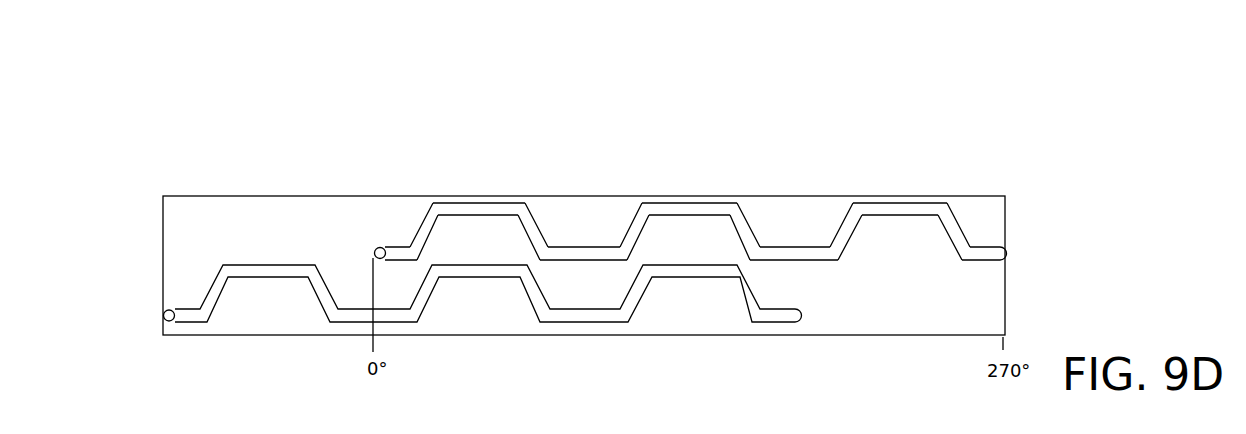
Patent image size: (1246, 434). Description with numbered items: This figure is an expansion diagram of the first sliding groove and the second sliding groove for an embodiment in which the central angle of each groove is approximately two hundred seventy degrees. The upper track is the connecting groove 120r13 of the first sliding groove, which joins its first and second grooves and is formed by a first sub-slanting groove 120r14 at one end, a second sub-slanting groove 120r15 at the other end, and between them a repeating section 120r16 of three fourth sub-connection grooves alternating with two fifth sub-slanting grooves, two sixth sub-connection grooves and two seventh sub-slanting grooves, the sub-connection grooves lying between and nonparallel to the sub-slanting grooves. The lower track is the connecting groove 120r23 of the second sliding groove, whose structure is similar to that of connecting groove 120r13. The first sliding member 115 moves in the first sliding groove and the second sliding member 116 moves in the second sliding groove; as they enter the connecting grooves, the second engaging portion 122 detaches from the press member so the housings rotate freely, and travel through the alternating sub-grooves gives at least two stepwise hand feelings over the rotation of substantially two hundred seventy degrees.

The connecting groove 120r13 is at (1178, 68).
The first sub-slanting groove 120r14 is at (410, 235).
The second sub-slanting groove 120r15 is at (957, 235).
The repeating serpentine section of trace 120r16 is at (1133, 107).
The connecting groove 120r23 is at (267, 262).
The second sliding member 116 is at (170, 321).
The first sliding member 115 is at (372, 253).
The second engaging portion 122 is at (565, 335).